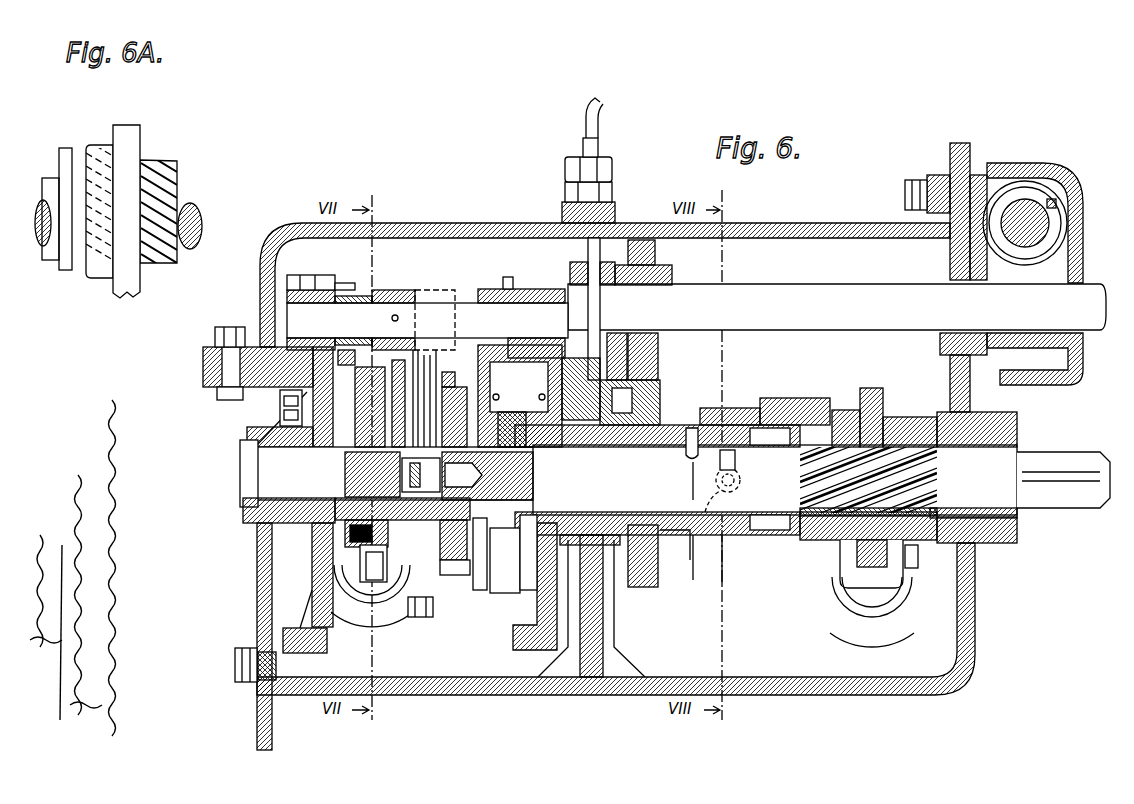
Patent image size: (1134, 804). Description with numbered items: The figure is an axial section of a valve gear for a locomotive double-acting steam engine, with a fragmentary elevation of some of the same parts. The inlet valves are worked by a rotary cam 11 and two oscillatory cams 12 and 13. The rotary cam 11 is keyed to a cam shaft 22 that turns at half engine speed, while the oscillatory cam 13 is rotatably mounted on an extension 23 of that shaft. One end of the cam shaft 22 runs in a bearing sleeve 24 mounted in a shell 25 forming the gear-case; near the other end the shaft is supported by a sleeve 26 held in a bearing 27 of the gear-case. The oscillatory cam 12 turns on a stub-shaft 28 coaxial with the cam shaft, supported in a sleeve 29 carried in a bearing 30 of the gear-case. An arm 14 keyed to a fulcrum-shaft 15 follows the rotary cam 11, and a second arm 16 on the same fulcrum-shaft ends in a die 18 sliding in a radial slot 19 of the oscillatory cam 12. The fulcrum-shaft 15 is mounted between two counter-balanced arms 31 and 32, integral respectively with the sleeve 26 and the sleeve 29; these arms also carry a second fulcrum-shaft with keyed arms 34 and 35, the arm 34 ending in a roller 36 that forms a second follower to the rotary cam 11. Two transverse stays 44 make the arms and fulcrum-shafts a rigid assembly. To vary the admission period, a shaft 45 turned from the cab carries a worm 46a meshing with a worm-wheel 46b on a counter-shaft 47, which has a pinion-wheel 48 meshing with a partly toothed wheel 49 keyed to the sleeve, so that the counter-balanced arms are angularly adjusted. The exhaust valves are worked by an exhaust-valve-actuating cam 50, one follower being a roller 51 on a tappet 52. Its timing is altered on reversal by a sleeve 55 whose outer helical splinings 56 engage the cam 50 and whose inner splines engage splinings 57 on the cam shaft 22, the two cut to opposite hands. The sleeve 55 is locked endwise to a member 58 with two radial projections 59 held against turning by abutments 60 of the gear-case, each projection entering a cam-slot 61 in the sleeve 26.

In FIG. 6, the rotary cam 11 is at (620, 408).
In FIG. 6, the oscillatory cam 12 is at (373, 363).
In FIG. 6, the oscillatory cam 13 is at (460, 385).
In FIG. 6, the arm 14 is at (508, 367).
In FIG. 6, the fulcrum-shaft 15 is at (430, 310).
In FIG. 6, the second arm 16 is at (420, 590).
In FIG. 6, the die 18 is at (310, 518).
In FIG. 6, the radial slot 19 is at (347, 557).
In FIG. 6, the cam shaft 22 is at (1040, 532).
In FIG. 6, the extension 23 is at (455, 482).
In FIG. 6, the bearing sleeve 24 is at (993, 535).
In FIG. 6, the shell 25 is at (966, 590).
In FIG. 6, the sleeve 26 is at (665, 545).
In FIG. 6, the bearing 27 is at (620, 425).
In FIG. 6, the stub-shaft 28 is at (262, 472).
In FIG. 6, the sleeve 29 is at (252, 510).
In FIG. 6, the bearing 30 is at (255, 427).
In FIG. 6, the counter-balanced arm 31 is at (617, 368).
In FIG. 6, the counter-balanced arm 32 is at (268, 345).
In FIG. 6, the arm 34 is at (480, 585).
In FIG. 6, the arm 35 is at (440, 560).
In FIG. 6, the roller 36 is at (513, 600).
In FIG. 6, the transverse stays 44 is at (348, 397).
In FIG. 6, the shaft 45 is at (1013, 205).
In FIG. 6, the worm 46a is at (1048, 196).
In FIG. 6, the worm-wheel 46b is at (1030, 352).
In FIG. 6, the counter-shaft 47 is at (837, 307).
In FIG. 6, the pinion-wheel 48 is at (640, 240).
In FIG. 6, the partly toothed wheel 49 is at (648, 592).
In FIG. 6A, the exhaust-valve-actuating cam 50 is at (127, 140).
In FIG. 6, the exhaust-valve-actuating cam 50 is at (883, 395).
In FIG. 6, the roller 51 is at (860, 566).
In FIG. 6, the tappet 52 is at (875, 597).
In FIG. 6A, the sleeve 55 is at (76, 172).
In FIG. 6, the sleeve 55 is at (930, 502).
In FIG. 6A, the helical splinings 56 is at (167, 178).
In FIG. 6, the helical splinings 56 is at (840, 415).
In FIG. 6A, the splinings 57 is at (196, 192).
In FIG. 6, the splinings 57 is at (910, 462).
In FIG. 6, the member 58 is at (762, 410).
In FIG. 6, the radial projections 59 is at (738, 488).
In FIG. 6, the abutments 60 is at (707, 560).
In FIG. 6, the cam-slots 61 is at (692, 458).